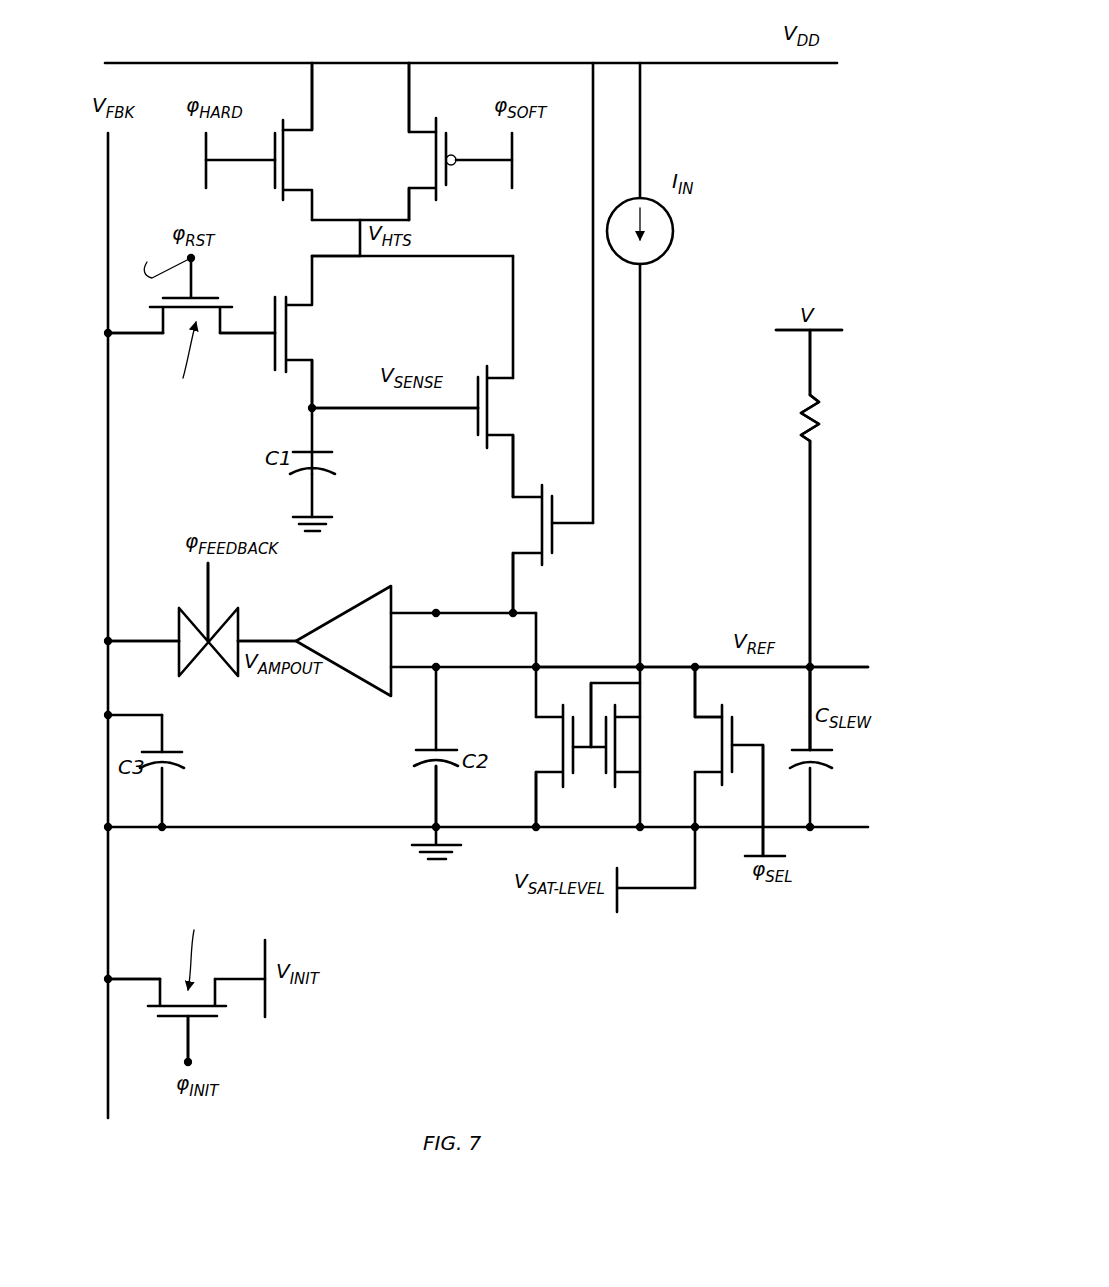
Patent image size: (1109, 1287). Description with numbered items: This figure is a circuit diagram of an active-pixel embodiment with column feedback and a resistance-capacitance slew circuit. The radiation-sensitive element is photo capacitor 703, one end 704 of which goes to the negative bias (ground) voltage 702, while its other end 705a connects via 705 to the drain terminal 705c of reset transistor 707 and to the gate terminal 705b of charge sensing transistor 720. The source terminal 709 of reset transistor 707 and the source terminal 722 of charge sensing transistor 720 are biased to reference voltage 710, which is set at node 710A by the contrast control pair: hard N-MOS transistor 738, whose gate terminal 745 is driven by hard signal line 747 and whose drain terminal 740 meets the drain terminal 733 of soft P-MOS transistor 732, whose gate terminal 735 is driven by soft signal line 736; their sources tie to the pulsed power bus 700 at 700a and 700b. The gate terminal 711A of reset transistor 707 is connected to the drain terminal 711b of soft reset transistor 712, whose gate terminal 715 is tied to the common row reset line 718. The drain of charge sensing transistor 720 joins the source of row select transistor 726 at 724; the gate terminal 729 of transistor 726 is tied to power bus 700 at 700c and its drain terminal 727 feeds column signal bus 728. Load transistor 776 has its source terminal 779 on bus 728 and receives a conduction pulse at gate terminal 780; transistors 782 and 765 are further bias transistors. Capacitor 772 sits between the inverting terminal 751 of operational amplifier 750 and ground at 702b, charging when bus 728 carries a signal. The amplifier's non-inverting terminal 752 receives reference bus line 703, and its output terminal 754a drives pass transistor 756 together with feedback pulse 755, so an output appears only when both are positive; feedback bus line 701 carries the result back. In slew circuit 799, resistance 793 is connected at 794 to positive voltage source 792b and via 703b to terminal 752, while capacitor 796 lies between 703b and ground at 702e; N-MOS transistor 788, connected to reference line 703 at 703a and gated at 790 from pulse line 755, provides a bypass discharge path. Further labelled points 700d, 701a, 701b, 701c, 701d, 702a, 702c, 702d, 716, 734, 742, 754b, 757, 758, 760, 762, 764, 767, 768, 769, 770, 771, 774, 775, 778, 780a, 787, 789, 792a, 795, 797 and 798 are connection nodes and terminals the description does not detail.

The reference bias voltage power bus 700 is at (820, 92).
The power bus connection point 700a is at (312, 63).
The power bus connection point 700b is at (409, 63).
The power bus connection point 700c is at (593, 63).
The supply connection node 700d is at (640, 63).
The feedback bus line 701 is at (108, 213).
The feedback line node 701a is at (108, 333).
The feedback line node 701b is at (108, 641).
The feedback line node 701c is at (108, 715).
The feedback line node 701d is at (108, 979).
The negative bias voltage 702 is at (330, 517).
The ground node 702a is at (162, 830).
The ground connection point 702b is at (437, 826).
The ground node 702c is at (536, 830).
The ground node 702d is at (642, 830).
The ground connection point 702e is at (812, 830).
The photo capacitor 703 is at (336, 464).
The reference bus connection point 703a is at (695, 666).
The reference bus connection point 703b is at (812, 666).
The photo capacitor end 704 is at (310, 505).
The photo capacitor connection 705 is at (308, 412).
The photo capacitor end 705a is at (326, 452).
The gate terminal of charge sensing transistor 705b is at (400, 410).
The drain terminal of reset transistor 705c is at (310, 382).
The reset transistor 707 is at (302, 326).
The source terminal of reset transistor 709 is at (314, 272).
The reference bias voltage V_hts 710 is at (366, 264).
The node 710A is at (360, 222).
The gate terminal of reset transistor 711A is at (262, 332).
The drain terminal of soft reset transistor 711b is at (234, 337).
The soft reset transistor 712 is at (212, 357).
The gate terminal of soft reset transistor 715 is at (194, 280).
The reset transistor terminal 716 is at (140, 336).
The common row reset line 718 is at (158, 256).
The charge sensing transistor 720 is at (500, 412).
The source terminal of charge sensing transistor 722 is at (513, 316).
The drain-source connection 724 is at (513, 468).
The row select transistor 726 is at (536, 526).
The drain terminal of row select transistor 727 is at (516, 580).
The column signal bus 728 is at (674, 231).
The gate terminal of row select transistor 729 is at (566, 520).
The soft P-MOS transistor 732 is at (432, 158).
The drain terminal of soft P-MOS transistor 733 is at (411, 216).
The soft transistor drain 734 is at (409, 100).
The gate terminal of soft P-MOS transistor 735 is at (478, 163).
The soft signal line 736 is at (514, 148).
The hard N-MOS transistor 738 is at (298, 152).
The drain terminal of hard N-MOS transistor 740 is at (312, 222).
The hard transistor drain 742 is at (312, 100).
The gate terminal of hard N-MOS transistor 745 is at (240, 163).
The hard signal line 747 is at (206, 165).
The operational amplifier 750 is at (343, 641).
The inverting terminal 751 is at (410, 612).
The non-inverting terminal 752 is at (408, 666).
The output terminal of operational amplifier 754a is at (290, 641).
The amplifier output line 754b is at (258, 641).
The feedback pulse line 755 is at (748, 858).
The pass transistor 756 is at (188, 662).
The switch connection line 757 is at (148, 641).
The switch control line 758 is at (210, 596).
The capacitor C3 760 is at (186, 766).
The capacitor C3 upper terminal 762 is at (162, 732).
The capacitor C3 lower terminal 764 is at (164, 800).
The bias transistor 765 is at (187, 954).
The init transistor gate 767 is at (194, 1036).
The init transistor terminal 768 is at (240, 979).
The init transistor terminal 769 is at (136, 982).
The init signal line 770 is at (190, 1062).
The init voltage terminal 771 is at (268, 956).
The capacitor C2 772 is at (418, 760).
The capacitor C2 upper terminal 774 is at (436, 720).
The capacitor C2 lower terminal 775 is at (436, 804).
The load transistor 776 is at (536, 750).
The transistor source connection 778 is at (536, 796).
The source terminal of load transistor 779 is at (536, 700).
The gate terminal of load transistor 780 is at (592, 752).
The transistor gate connection 780a is at (640, 680).
The bias transistor 782 is at (624, 750).
The transistor drain connection 787 is at (700, 705).
The N-MOS bypass transistor 788 is at (718, 746).
The select transistor source connection 789 is at (695, 800).
The gate terminal of N-MOS bypass transistor 790 is at (746, 746).
The saturation level terminal 792a is at (617, 878).
The positive voltage source 792b is at (788, 330).
The resistance 793 is at (814, 418).
The resistance connection point 794 is at (808, 358).
The slew resistor lower connection 795 is at (808, 530).
The capacitor 796 is at (820, 762).
The slew capacitor upper terminal 797 is at (812, 702).
The slew capacitor lower terminal 798 is at (814, 796).
The R-Slew circuit 799 is at (752, 532).